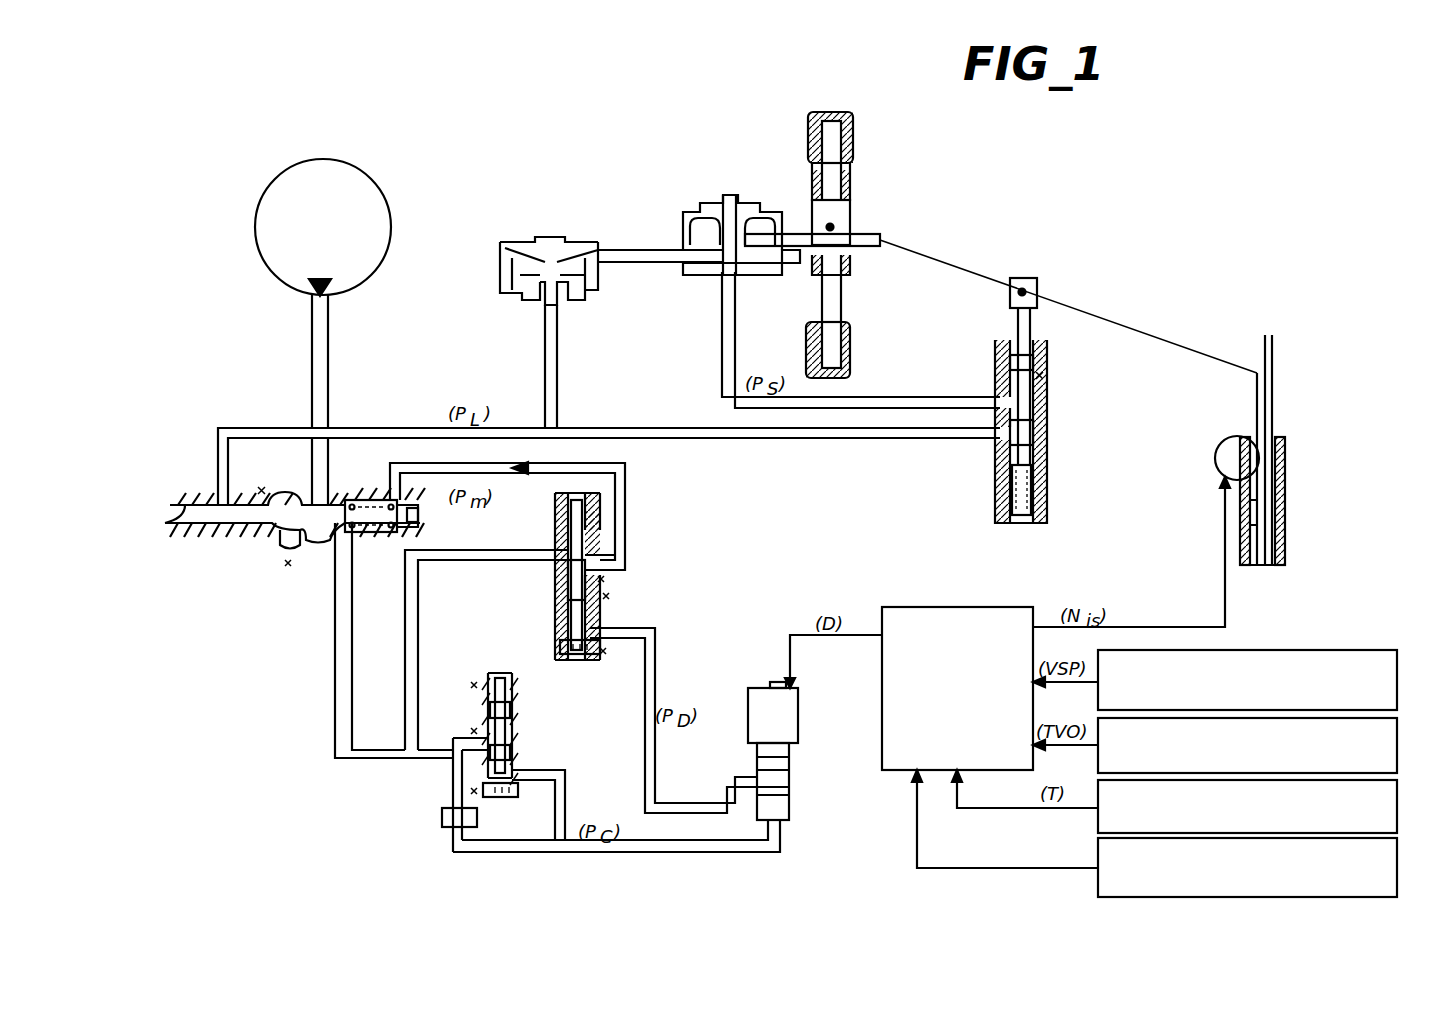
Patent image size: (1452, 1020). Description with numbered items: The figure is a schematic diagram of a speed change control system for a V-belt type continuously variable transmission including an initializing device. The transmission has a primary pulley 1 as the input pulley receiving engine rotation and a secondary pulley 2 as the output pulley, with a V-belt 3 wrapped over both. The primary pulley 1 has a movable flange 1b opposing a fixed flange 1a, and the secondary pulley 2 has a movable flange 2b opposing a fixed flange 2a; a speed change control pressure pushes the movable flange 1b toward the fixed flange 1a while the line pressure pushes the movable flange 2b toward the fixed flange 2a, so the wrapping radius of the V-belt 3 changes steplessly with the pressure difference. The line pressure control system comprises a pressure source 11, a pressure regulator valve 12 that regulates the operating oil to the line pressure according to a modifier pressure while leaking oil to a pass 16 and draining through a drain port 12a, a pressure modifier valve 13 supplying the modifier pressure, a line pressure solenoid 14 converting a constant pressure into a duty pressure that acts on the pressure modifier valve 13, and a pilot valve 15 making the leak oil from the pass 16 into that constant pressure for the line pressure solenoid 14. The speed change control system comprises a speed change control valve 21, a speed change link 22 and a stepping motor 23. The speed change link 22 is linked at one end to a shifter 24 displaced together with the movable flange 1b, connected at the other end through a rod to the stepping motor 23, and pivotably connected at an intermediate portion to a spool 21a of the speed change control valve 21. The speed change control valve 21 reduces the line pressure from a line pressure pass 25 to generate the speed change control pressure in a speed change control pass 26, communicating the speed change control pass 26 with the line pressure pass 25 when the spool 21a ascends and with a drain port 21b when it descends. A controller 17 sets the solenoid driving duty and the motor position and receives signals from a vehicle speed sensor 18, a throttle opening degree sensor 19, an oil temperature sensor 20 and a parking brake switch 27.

The primary pulley 1 is at (741, 227).
The fixed flange 1a is at (760, 272).
The movable flange 1b is at (768, 200).
The secondary pulley 2 is at (515, 283).
The fixed flange 2a is at (517, 243).
The movable flange 2b is at (500, 282).
The V-belt 3 is at (632, 250).
The pressure source 11 is at (366, 178).
The pressure regulator valve 12 is at (295, 551).
The drain port 12a is at (293, 556).
The pressure modifier valve 13 is at (618, 610).
The line pressure solenoid 14 is at (800, 716).
The pilot valve 15 is at (535, 718).
The pass 16 is at (402, 748).
The controller 17 is at (968, 607).
The vehicle speed sensor 18 is at (1400, 683).
The throttle opening degree sensor 19 is at (1400, 747).
The oil temperature sensor 20 is at (1400, 807).
The speed change control valve 21 is at (1065, 374).
The spool 21a is at (1030, 278).
The drain port 21b is at (1048, 377).
The speed change link 22 is at (1150, 332).
The stepping motor 23 is at (1232, 445).
The shifter 24 is at (853, 226).
The line pressure pass 25 is at (893, 440).
The speed change control pass 26 is at (910, 397).
The parking brake switch 27 is at (1400, 869).